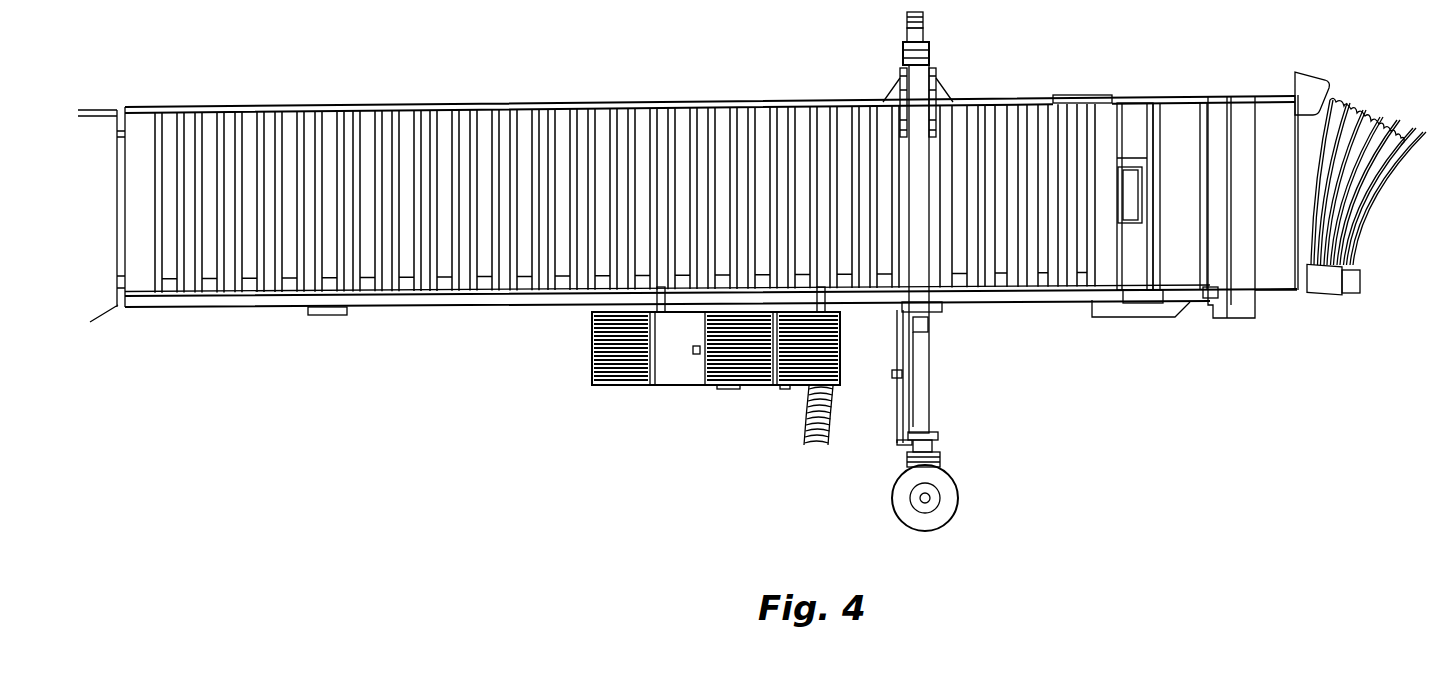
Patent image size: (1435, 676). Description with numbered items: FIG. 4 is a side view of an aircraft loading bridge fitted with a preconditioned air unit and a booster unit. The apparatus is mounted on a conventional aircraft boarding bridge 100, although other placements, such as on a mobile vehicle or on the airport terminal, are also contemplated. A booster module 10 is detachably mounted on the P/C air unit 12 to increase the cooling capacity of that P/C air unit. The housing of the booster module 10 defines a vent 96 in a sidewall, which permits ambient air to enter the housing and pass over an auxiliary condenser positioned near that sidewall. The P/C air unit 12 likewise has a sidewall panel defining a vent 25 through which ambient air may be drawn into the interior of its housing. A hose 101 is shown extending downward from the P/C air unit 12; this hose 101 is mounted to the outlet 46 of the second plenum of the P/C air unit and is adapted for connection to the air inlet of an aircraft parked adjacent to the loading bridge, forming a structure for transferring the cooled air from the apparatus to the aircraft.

The aircraft boarding bridge 100 is at (366, 104).
The booster module 10 is at (590, 352).
The vent 96 is at (628, 386).
The vent 25 is at (783, 388).
The P/C air unit 12 is at (845, 357).
The outlet 46 is at (842, 386).
The hose 101 is at (816, 445).